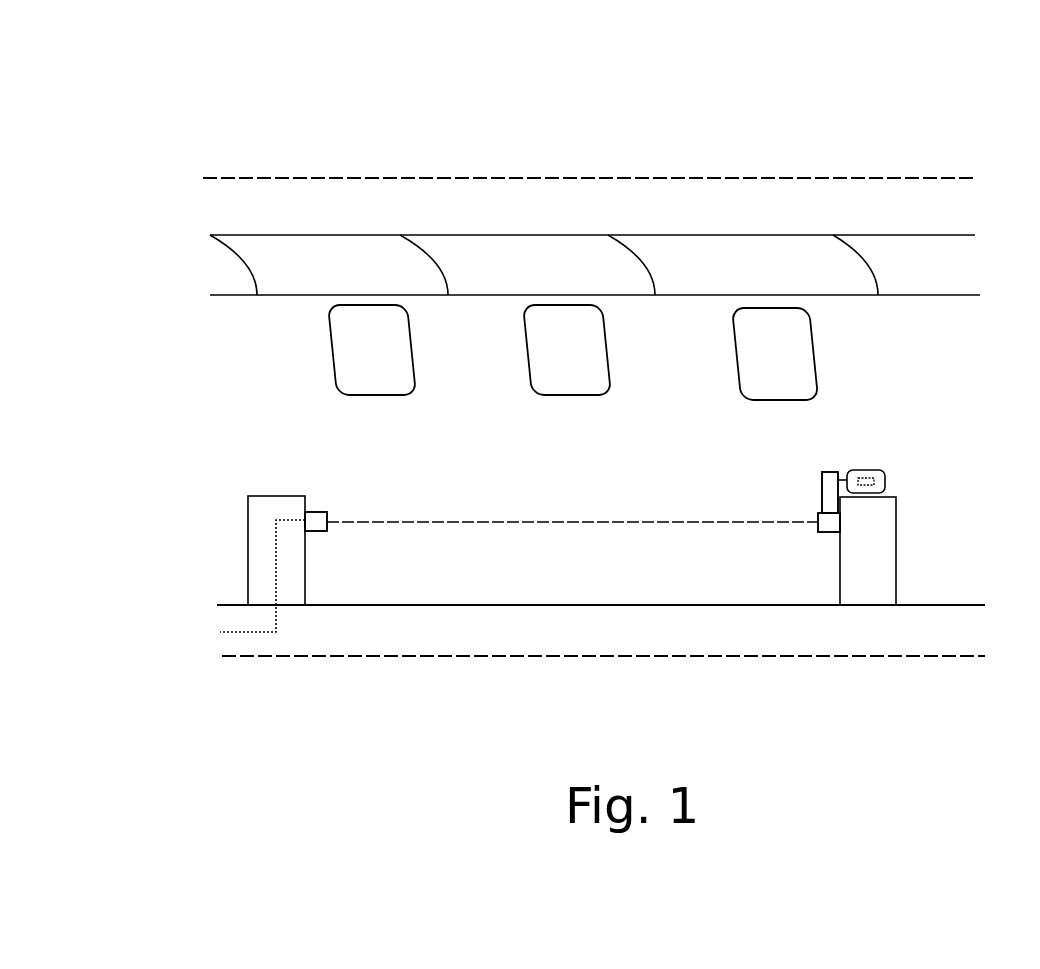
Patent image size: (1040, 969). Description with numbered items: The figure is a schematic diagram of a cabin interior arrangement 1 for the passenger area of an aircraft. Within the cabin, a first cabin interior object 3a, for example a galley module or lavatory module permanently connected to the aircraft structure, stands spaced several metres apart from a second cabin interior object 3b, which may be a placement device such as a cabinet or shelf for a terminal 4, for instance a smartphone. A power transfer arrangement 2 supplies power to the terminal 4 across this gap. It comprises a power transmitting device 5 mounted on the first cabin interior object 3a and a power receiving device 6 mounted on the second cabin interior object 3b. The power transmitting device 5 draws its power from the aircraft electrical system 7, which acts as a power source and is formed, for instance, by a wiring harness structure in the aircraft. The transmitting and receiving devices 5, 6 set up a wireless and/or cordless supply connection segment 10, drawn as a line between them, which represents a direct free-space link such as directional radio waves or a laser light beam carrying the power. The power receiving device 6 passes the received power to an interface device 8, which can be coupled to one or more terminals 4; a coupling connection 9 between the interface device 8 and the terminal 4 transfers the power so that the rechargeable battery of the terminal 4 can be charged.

The cabin interior arrangement 1 is at (163, 141).
The power transfer arrangement 2 is at (343, 488).
The first cabin interior object 3a is at (265, 513).
The second cabin interior object 3b is at (882, 540).
The terminal 4 is at (870, 469).
The power transmitting device 5 is at (317, 512).
The power receiving device 6 is at (827, 527).
The aircraft electrical system 7 is at (235, 633).
The interface device 8 is at (830, 497).
The coupling connection 9 is at (842, 472).
The wireless and/or cordless supply connection segment 10 is at (507, 520).